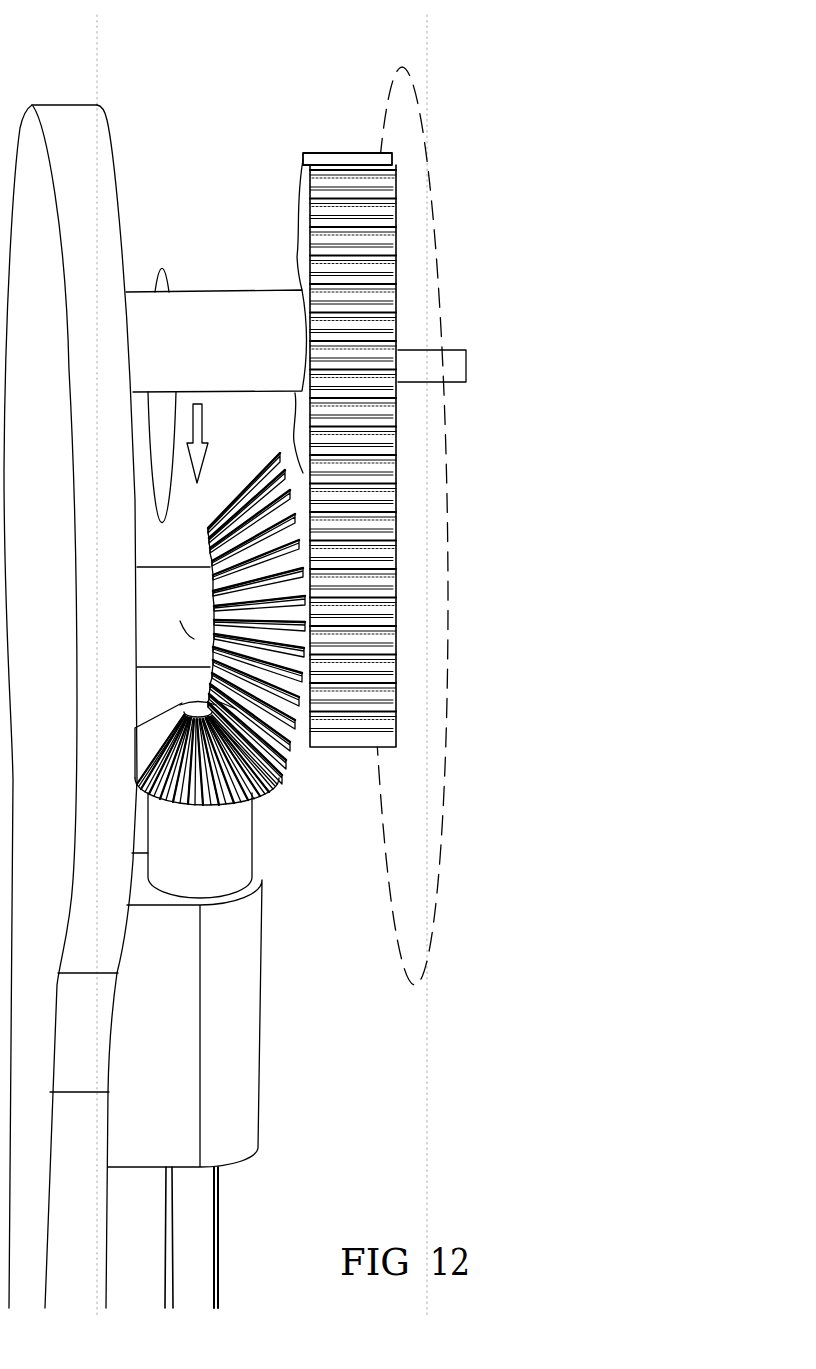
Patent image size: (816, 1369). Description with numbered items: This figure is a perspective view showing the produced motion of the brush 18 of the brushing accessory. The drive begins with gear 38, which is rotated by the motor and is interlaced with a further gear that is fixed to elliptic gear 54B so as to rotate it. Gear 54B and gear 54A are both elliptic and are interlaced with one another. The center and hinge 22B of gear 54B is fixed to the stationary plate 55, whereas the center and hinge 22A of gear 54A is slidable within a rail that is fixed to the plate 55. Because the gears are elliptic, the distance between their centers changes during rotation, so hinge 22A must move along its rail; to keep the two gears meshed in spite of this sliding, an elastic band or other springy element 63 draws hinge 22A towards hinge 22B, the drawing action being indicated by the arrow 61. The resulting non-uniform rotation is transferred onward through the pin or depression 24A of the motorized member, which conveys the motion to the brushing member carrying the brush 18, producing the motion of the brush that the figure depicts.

The stationary plate 55 is at (117, 187).
The elastic band 63 is at (166, 270).
The center and hinge of gear 54A 22A is at (224, 318).
The drawing motion 61 is at (204, 427).
The gear 54A is at (331, 162).
The pin or depression of motorized member 24A is at (462, 366).
The center and hinge of gear 54B 22B is at (378, 636).
The gear 54B is at (421, 504).
The brush 18 is at (421, 504).
The gear 38 is at (421, 504).